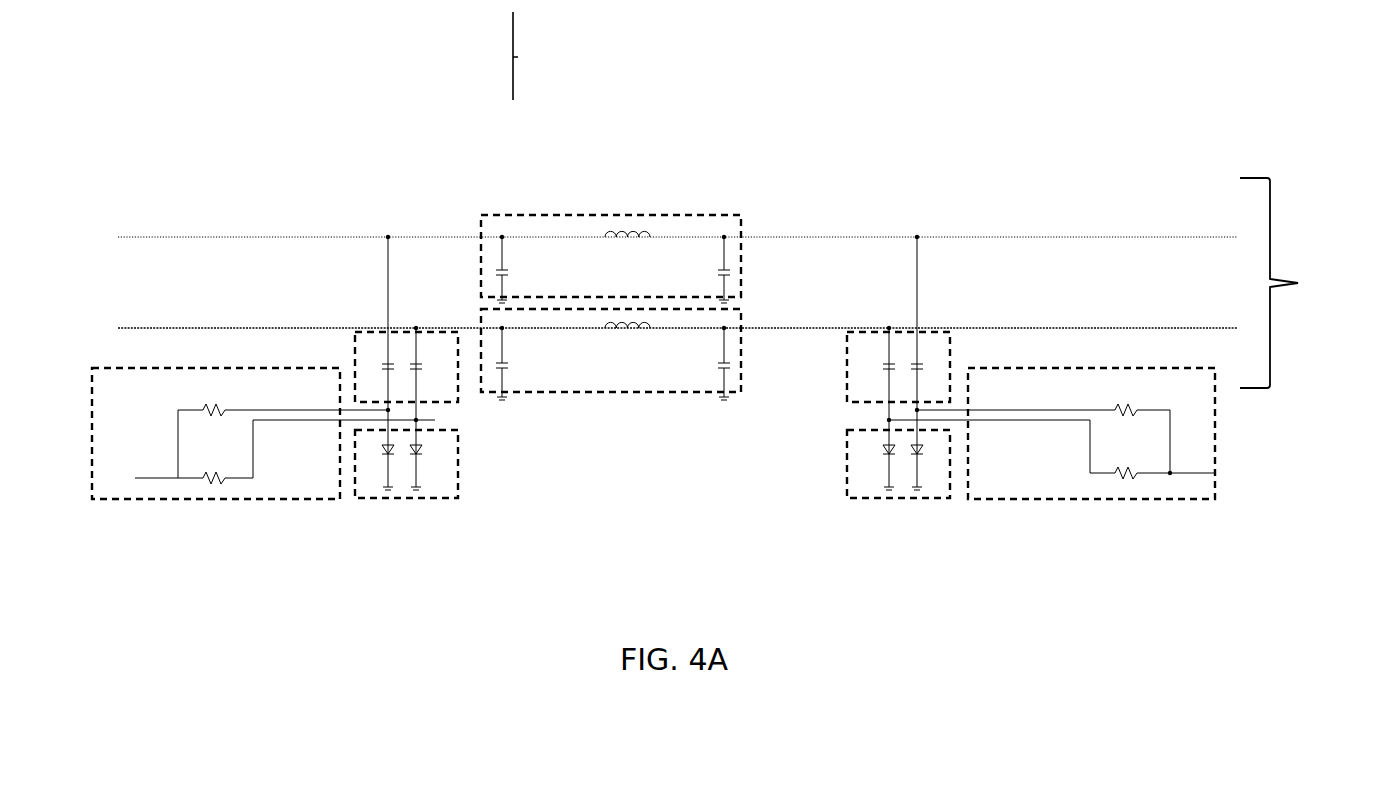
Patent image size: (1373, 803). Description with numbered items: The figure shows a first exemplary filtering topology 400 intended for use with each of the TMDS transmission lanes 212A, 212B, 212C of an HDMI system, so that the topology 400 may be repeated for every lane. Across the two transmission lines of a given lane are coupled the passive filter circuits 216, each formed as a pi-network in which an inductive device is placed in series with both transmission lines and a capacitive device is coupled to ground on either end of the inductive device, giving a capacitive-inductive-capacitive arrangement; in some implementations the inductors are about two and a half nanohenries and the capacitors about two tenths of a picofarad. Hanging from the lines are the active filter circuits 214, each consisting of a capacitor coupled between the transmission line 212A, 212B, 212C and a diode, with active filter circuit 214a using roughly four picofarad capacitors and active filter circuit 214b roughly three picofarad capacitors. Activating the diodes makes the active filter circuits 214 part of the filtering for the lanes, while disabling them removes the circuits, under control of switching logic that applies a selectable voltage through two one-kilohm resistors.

The filtering topology 400 is at (972, 100).
The TMDS transmission lane 212A is at (737, 252).
The TMDS transmission lane 212B is at (737, 302).
The TMDS transmission lane 212C is at (1296, 283).
The active filter circuits 214 is at (512, 56).
The active filter circuit 214a is at (458, 400).
The active filter circuit 214b is at (845, 378).
The passive filter circuits 216 is at (577, 215).